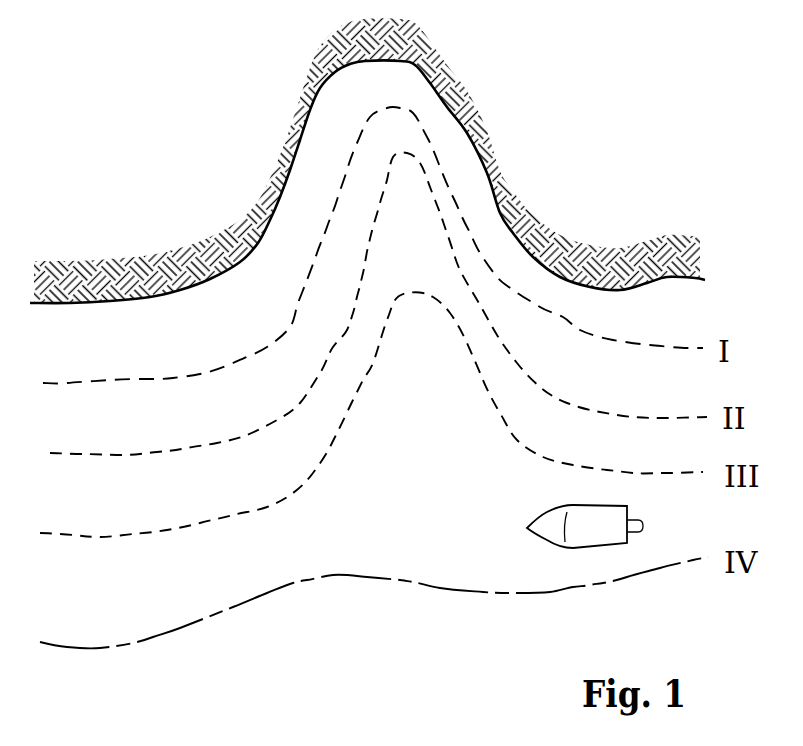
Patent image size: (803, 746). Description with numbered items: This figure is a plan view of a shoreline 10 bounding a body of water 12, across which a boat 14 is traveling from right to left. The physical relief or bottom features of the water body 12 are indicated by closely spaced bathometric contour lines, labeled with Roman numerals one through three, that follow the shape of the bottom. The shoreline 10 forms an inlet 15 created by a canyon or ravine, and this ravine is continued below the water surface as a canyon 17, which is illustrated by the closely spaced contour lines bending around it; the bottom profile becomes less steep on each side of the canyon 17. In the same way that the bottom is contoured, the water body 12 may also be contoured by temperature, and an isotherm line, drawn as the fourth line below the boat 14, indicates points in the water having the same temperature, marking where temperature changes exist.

The shoreline 10 is at (180, 289).
The body of water 12 is at (90, 358).
The boat 14 is at (533, 520).
The inlet 15 is at (479, 70).
The canyon 17 is at (423, 366).